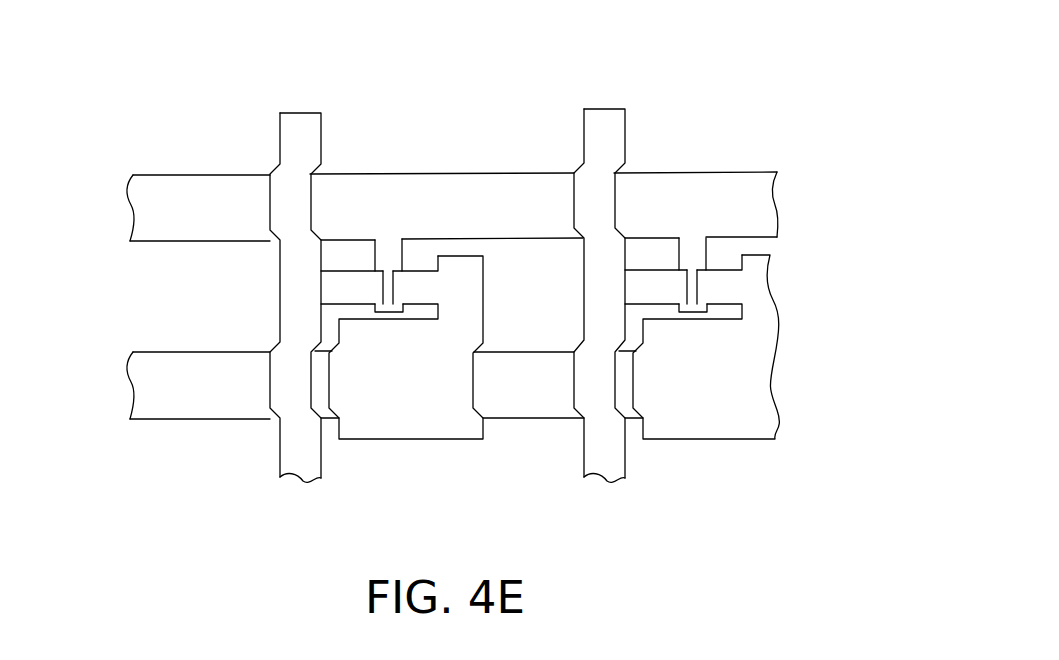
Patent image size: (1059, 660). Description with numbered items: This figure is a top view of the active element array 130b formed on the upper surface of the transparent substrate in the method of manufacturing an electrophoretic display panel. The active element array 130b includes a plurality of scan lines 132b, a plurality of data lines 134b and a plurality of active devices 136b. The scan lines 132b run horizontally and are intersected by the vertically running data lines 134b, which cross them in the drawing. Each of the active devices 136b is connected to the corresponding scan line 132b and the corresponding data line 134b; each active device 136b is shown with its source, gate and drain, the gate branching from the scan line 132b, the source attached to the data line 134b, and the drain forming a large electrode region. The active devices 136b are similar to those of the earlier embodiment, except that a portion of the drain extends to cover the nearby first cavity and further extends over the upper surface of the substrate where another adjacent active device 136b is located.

The active element array 130b is at (438, 288).
The scan lines 132b is at (150, 210).
The data lines 134b is at (294, 128).
The active devices 136b is at (463, 269).